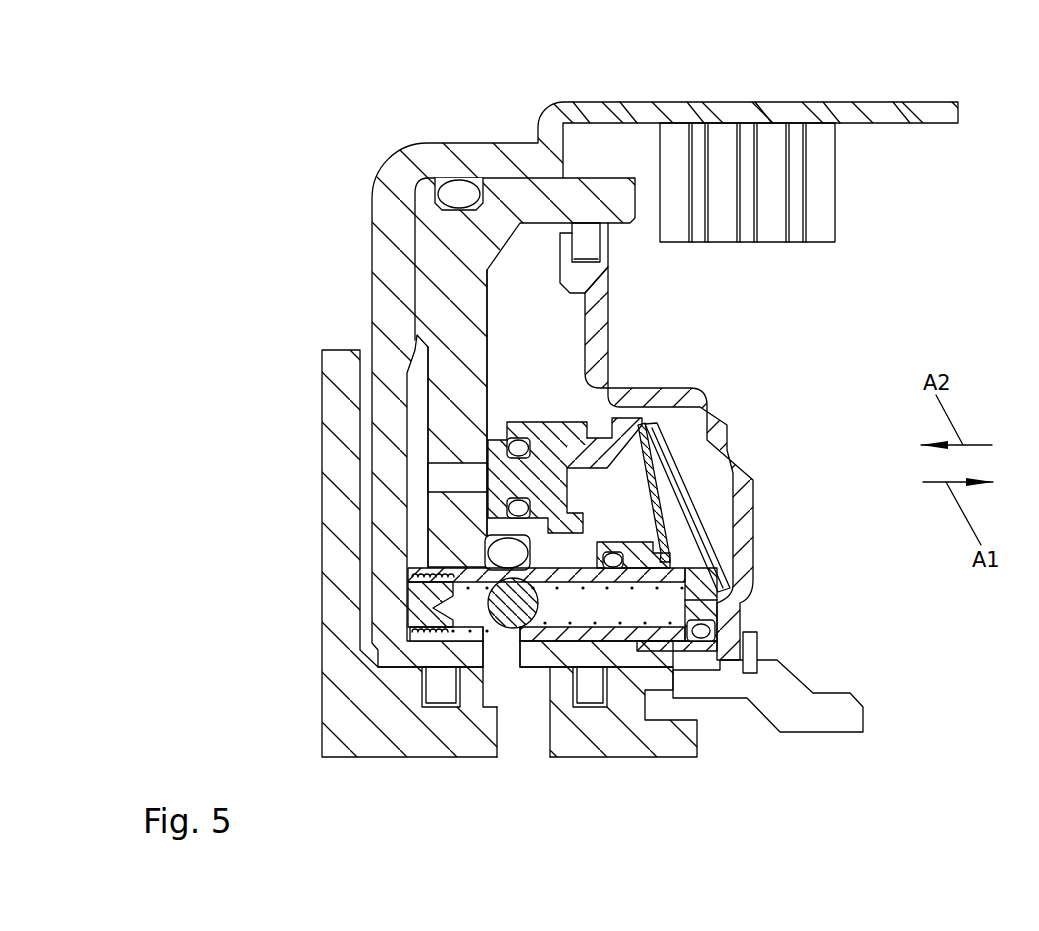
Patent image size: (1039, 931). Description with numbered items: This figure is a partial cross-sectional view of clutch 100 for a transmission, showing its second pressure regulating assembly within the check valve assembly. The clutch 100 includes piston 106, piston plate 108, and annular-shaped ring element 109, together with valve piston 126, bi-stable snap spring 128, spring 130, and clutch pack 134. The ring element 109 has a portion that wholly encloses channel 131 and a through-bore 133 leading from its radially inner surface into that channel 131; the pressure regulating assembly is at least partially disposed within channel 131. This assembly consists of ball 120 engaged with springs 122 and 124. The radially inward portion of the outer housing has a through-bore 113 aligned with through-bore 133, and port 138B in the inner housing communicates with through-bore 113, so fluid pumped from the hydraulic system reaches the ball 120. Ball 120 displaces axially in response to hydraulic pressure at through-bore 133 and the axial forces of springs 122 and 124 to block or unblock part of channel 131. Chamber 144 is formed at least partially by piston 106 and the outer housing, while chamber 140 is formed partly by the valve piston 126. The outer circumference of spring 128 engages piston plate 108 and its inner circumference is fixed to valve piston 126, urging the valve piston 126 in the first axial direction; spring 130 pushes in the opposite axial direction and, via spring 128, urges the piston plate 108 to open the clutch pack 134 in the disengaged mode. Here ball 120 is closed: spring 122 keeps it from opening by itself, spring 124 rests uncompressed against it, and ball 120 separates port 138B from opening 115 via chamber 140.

The clutch 100 is at (255, 163).
The piston 106 is at (512, 193).
The piston plate 108 is at (623, 423).
The annular-shaped ring element 109 is at (677, 648).
The through-bore 113 is at (492, 690).
The opening 115 is at (653, 617).
The ball 120 is at (502, 622).
The spring 122 is at (468, 632).
The spring 124 is at (670, 628).
The valve piston 126 is at (690, 568).
The bi-stable snap spring 128 is at (658, 427).
The spring 130 is at (677, 483).
The channel 131 is at (463, 600).
The through-bore 133 is at (507, 630).
The clutch pack 134 is at (820, 192).
The port 138B is at (535, 742).
The chamber 140 is at (663, 602).
The chamber 144 is at (423, 392).